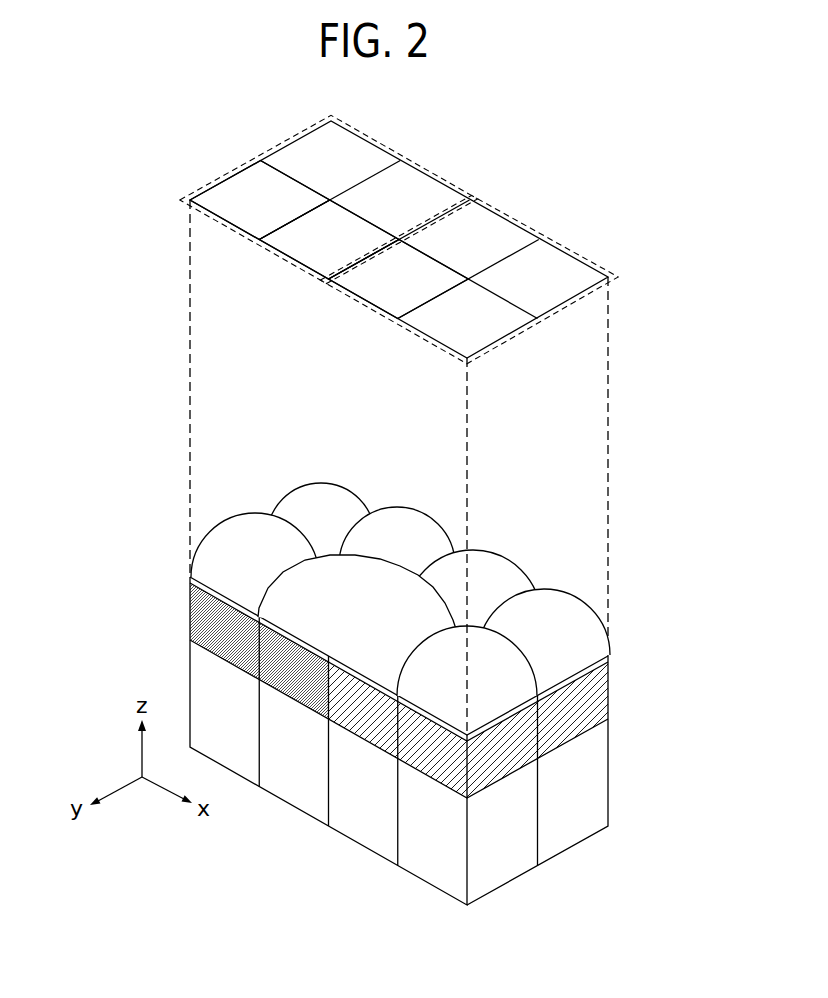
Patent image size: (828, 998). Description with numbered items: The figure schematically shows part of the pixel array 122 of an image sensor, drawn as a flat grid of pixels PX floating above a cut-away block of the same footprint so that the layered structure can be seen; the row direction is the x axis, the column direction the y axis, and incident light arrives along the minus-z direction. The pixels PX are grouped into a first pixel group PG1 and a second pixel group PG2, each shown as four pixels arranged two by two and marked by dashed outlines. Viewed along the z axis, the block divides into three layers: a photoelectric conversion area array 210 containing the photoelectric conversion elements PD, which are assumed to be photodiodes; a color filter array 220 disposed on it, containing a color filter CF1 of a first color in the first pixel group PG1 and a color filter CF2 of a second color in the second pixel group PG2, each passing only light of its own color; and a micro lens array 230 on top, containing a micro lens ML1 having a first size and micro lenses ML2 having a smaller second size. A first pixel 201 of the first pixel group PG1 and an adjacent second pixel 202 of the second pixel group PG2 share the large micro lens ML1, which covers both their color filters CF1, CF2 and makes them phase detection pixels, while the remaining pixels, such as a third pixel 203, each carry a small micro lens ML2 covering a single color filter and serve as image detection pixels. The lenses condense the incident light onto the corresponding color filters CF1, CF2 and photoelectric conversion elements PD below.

The pixel PX is at (399, 239).
The first pixel group PG1 is at (417, 164).
The second pixel group PG2 is at (540, 233).
The first pixel 201 is at (293, 247).
The second pixel 202 is at (361, 287).
The third pixel 203 is at (223, 208).
The pixel array 122 is at (386, 631).
The micro lens having a first size ML1 is at (330, 573).
The micro lens having a second size ML2 is at (228, 528).
The color filter CF1 is at (259, 651).
The color filter CF2 is at (620, 656).
The photoelectric conversion element PD is at (620, 823).
The micro lens array 230 is at (431, 567).
The color filter array 220 is at (431, 687).
The photoelectric conversion area array 210 is at (431, 741).